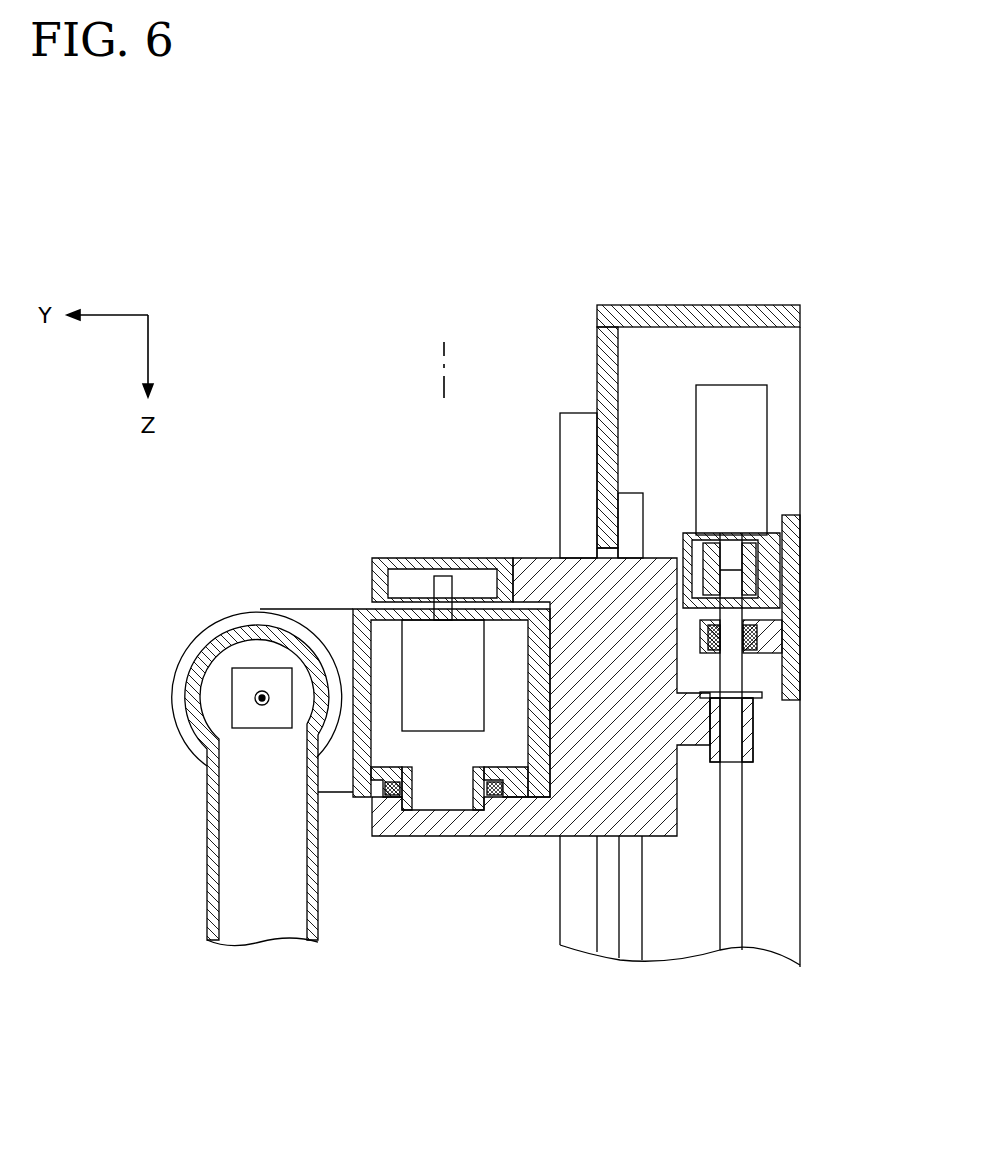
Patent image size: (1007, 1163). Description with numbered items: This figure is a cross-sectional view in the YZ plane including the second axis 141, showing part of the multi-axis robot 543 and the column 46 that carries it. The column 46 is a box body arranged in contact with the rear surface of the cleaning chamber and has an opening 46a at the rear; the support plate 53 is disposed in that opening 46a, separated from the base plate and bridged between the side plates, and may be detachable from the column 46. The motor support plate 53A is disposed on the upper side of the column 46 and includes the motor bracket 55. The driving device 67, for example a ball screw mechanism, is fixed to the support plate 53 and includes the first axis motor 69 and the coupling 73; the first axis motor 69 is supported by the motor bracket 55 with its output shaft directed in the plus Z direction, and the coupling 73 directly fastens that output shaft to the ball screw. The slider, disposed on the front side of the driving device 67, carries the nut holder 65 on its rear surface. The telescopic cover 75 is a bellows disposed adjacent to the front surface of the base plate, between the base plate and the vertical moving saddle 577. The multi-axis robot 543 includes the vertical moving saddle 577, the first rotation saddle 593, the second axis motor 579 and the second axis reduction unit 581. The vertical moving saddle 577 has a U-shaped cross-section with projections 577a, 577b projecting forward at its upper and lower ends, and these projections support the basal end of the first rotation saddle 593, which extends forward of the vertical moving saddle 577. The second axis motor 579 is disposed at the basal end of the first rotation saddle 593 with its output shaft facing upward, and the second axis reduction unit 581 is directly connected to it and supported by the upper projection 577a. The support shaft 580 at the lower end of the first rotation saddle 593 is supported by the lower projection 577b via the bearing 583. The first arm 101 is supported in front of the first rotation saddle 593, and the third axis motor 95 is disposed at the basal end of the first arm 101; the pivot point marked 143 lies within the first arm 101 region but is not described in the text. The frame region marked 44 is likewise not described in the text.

The head unit frame 44 is at (570, 324).
The column 46 is at (722, 305).
The opening 46a is at (803, 335).
The multi-axis robot 543 is at (896, 284).
The second axis 141 is at (447, 368).
The telescopic cover 75 is at (578, 412).
The first axis motor 69 is at (767, 398).
The motor bracket 55 is at (773, 525).
The coupling 73 is at (792, 560).
The support plate 53 is at (802, 635).
The motor support plate 53A is at (741, 636).
The nut holder 65 is at (763, 745).
The driving device 67 is at (780, 855).
The vertical moving saddle 577 is at (399, 721).
The projection 577a is at (372, 578).
The projection 577b is at (428, 836).
The second axis reduction unit 581 is at (420, 572).
The second axis motor 579 is at (483, 685).
The bearing 583 is at (392, 797).
The support shaft 580 is at (492, 797).
The first rotation saddle 593 is at (228, 612).
The first arm 101 is at (207, 848).
The pivot 143 is at (256, 697).
The third axis motor 95 is at (232, 714).